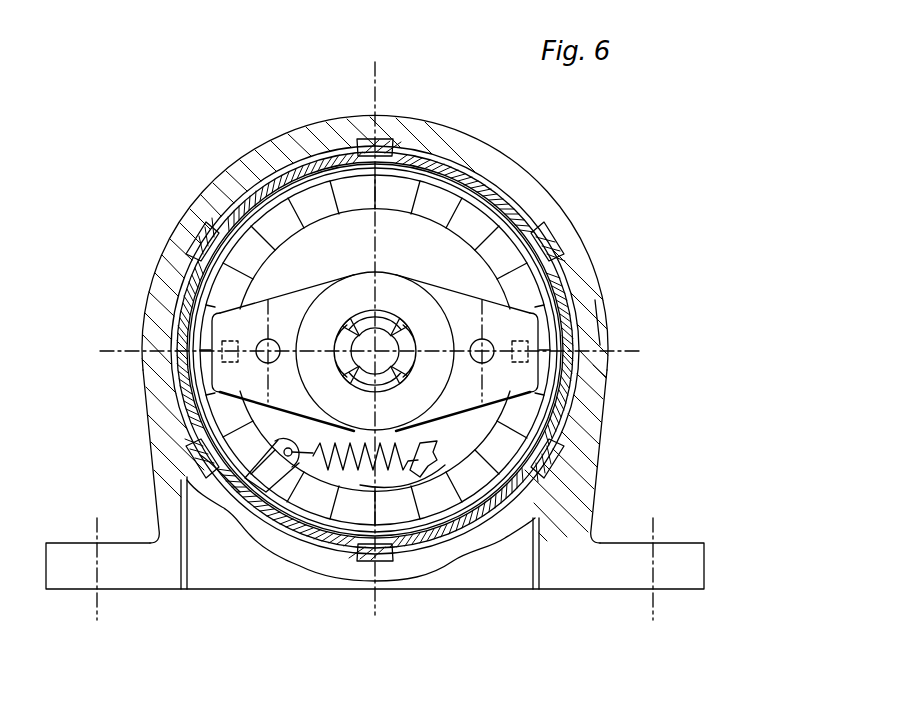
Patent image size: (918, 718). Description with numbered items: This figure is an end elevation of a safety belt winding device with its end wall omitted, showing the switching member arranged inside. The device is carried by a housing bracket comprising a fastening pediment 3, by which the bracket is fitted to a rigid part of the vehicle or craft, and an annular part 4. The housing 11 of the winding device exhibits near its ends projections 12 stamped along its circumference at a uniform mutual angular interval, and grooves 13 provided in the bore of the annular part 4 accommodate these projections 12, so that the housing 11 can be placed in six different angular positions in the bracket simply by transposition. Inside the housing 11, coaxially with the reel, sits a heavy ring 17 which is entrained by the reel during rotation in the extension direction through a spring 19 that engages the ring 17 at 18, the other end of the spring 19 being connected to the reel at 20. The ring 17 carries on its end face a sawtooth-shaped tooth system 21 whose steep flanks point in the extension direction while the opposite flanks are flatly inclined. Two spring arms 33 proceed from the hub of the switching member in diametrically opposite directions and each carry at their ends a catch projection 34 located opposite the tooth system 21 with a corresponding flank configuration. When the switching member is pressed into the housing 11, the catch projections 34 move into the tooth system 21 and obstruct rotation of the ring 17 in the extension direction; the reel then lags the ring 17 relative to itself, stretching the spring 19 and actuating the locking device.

The fastening pediment 3 is at (80, 567).
The annular part 4 is at (583, 270).
The housing 11 is at (577, 330).
The projections 12 is at (178, 226).
The grooves 13 is at (187, 272).
The heavy ring 17 is at (523, 293).
The spring engagement point on the ring 18 is at (248, 419).
The spring 19 is at (450, 470).
The spring connection point on the reel 20 is at (547, 463).
The tooth system 21 is at (247, 498).
The spring arms 33 is at (548, 396).
The catch projection 34 is at (497, 387).